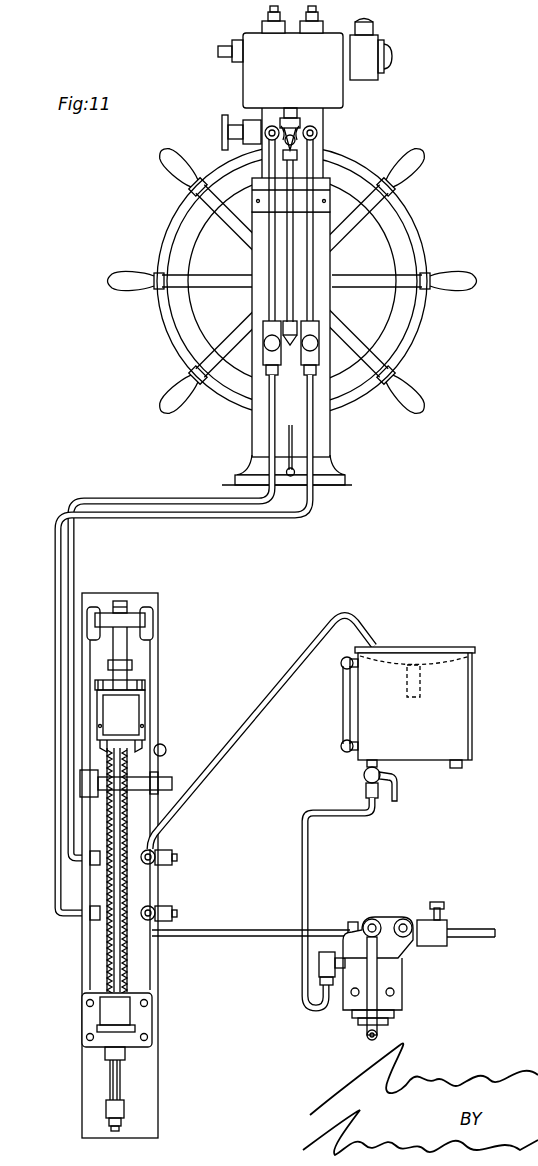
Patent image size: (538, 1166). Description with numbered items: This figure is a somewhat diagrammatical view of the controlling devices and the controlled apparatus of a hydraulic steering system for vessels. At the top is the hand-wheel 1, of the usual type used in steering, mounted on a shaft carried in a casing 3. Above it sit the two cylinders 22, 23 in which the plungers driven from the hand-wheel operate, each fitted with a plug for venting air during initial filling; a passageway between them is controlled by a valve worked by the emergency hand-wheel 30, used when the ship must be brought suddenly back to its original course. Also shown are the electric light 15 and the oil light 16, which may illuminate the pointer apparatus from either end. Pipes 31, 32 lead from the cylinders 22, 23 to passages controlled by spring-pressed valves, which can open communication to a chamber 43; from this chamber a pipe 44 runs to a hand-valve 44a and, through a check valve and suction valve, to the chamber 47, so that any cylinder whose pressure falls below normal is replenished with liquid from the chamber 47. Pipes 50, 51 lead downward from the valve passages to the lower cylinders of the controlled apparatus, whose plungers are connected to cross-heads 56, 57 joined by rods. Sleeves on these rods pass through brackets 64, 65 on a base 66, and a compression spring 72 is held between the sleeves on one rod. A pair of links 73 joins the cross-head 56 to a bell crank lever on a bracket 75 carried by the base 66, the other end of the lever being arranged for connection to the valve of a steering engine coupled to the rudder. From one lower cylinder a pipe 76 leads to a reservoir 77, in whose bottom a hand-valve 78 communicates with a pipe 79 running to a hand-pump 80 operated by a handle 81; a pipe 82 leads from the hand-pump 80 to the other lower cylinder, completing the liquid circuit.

The hand-wheel 1 is at (292, 282).
The casing 3 is at (340, 378).
The electric light 15 is at (230, 55).
The oil light 16 is at (366, 60).
The cylinder 22 is at (322, 26).
The cylinder 23 is at (263, 26).
The emergency hand-wheel 30 is at (225, 120).
The pipe 31 is at (269, 300).
The pipe 32 is at (313, 300).
The chamber 43 is at (292, 348).
The pipe 44 is at (292, 276).
The hand-valve 44a is at (304, 136).
The chamber 47 is at (287, 259).
The pipe 50 is at (268, 447).
The pipe 51 is at (313, 447).
The cross-head 56 is at (140, 612).
The cross-head 57 is at (118, 1110).
The bracket 64 is at (142, 712).
The bracket 65 is at (148, 999).
The base 66 is at (116, 852).
The compression spring 72 is at (124, 892).
The links 73 is at (88, 646).
The bracket 75 is at (88, 826).
The pipe 76 is at (262, 717).
The reservoir 77 is at (460, 700).
The hand-valve 78 is at (398, 794).
The pipe 79 is at (306, 882).
The hand-pump 80 is at (385, 978).
The handle 81 is at (478, 930).
The pipe 82 is at (268, 937).